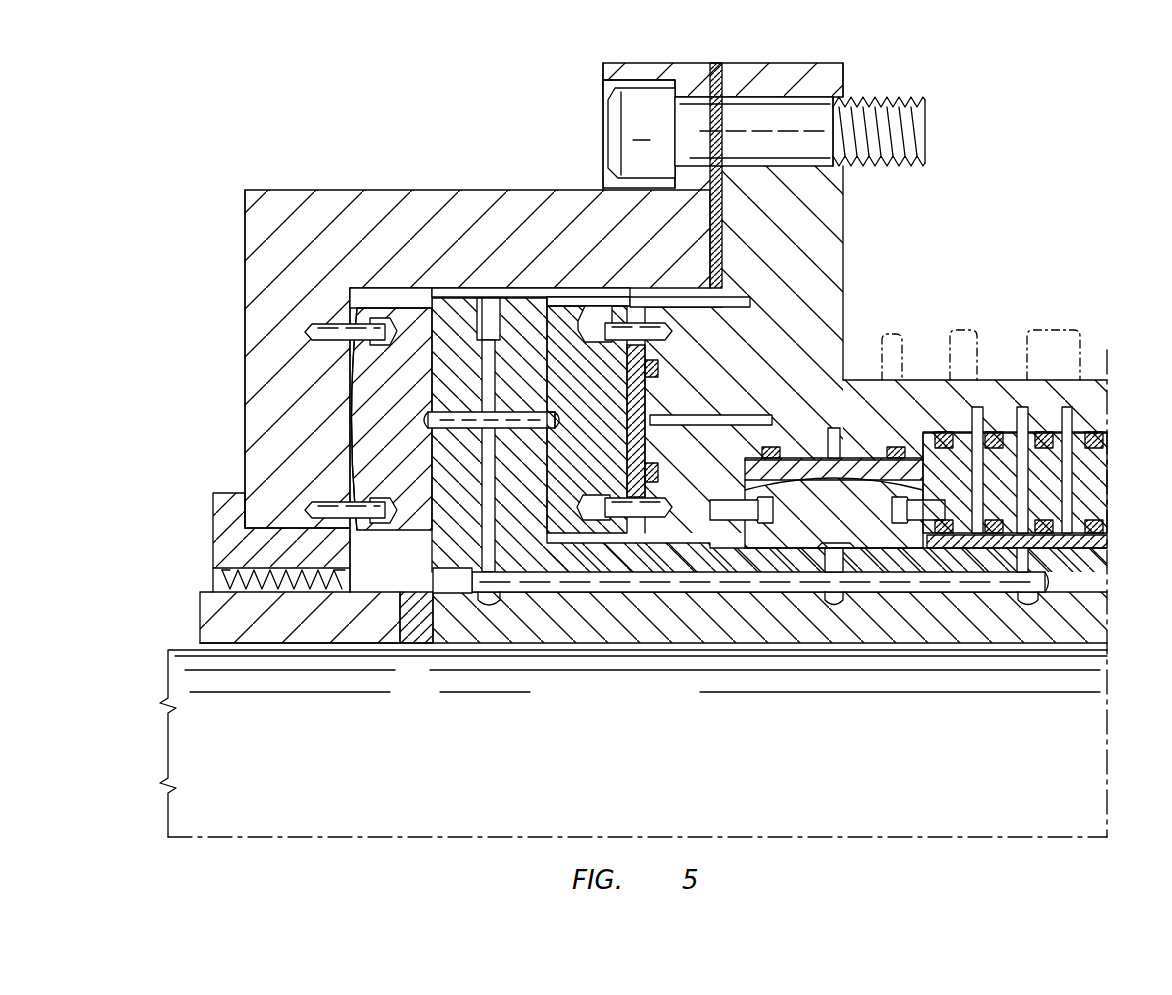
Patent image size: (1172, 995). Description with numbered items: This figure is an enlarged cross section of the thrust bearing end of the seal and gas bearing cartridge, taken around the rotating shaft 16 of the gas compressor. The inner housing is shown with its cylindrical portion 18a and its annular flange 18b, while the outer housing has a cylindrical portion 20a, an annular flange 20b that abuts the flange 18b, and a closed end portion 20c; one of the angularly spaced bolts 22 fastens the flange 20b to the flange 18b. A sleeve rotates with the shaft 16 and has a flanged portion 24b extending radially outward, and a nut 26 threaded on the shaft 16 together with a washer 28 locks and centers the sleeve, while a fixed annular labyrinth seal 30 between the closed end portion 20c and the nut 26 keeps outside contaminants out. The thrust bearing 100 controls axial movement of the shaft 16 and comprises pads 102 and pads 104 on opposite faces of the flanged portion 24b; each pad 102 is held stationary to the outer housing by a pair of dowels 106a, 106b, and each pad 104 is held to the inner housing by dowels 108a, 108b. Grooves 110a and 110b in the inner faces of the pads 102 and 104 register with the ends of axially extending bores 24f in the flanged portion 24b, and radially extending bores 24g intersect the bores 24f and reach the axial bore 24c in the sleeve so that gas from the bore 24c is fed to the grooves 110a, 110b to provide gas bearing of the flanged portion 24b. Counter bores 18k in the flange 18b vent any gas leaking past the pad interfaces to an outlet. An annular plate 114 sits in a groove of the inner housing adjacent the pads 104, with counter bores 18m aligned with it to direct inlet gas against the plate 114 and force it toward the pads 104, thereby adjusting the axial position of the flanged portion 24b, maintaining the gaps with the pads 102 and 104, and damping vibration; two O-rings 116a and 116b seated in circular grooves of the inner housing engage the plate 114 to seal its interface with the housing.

The shaft 16 is at (305, 761).
The cylindrical portion 18a is at (918, 380).
The annular flange 18b is at (838, 266).
The counter bores 18k is at (752, 302).
The counter bores 18m is at (745, 414).
The cylindrical portion 20a is at (293, 193).
The annular flange 20b is at (662, 66).
The closed end portion 20c is at (245, 238).
The bolts 22 is at (790, 112).
The flanged portion 24b is at (450, 300).
The axial bores 24c is at (578, 594).
The transverse bores 24f is at (560, 420).
The radial bores 24g is at (480, 456).
The nut 26 is at (420, 632).
The washer 28 is at (200, 605).
The labyrinth seal 30 is at (213, 508).
The thrust bearing 100 is at (560, 296).
The pads 102 is at (395, 298).
The pads 104 is at (597, 320).
The dowel 106a is at (305, 330).
The dowel 106b is at (305, 506).
The dowel 108a is at (672, 332).
The dowel 108b is at (656, 520).
The groove 110a is at (428, 416).
The groove 110b is at (560, 428).
The annular plate 114 is at (646, 392).
The O-ring 116a is at (645, 368).
The O-ring 116b is at (658, 476).